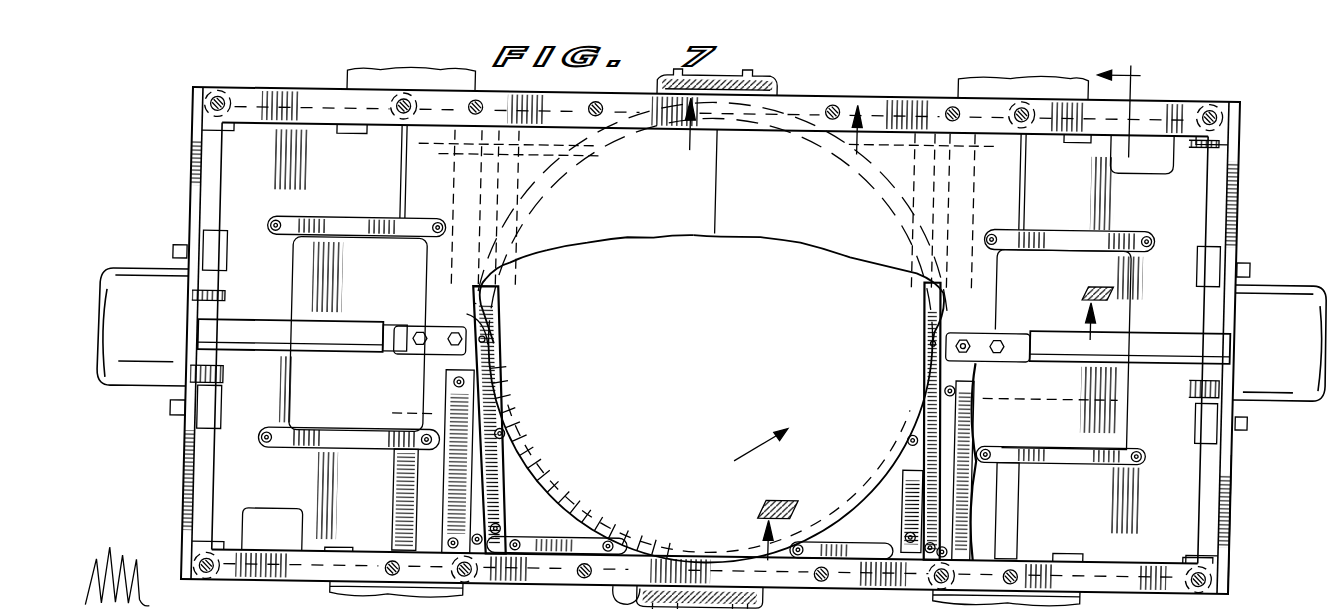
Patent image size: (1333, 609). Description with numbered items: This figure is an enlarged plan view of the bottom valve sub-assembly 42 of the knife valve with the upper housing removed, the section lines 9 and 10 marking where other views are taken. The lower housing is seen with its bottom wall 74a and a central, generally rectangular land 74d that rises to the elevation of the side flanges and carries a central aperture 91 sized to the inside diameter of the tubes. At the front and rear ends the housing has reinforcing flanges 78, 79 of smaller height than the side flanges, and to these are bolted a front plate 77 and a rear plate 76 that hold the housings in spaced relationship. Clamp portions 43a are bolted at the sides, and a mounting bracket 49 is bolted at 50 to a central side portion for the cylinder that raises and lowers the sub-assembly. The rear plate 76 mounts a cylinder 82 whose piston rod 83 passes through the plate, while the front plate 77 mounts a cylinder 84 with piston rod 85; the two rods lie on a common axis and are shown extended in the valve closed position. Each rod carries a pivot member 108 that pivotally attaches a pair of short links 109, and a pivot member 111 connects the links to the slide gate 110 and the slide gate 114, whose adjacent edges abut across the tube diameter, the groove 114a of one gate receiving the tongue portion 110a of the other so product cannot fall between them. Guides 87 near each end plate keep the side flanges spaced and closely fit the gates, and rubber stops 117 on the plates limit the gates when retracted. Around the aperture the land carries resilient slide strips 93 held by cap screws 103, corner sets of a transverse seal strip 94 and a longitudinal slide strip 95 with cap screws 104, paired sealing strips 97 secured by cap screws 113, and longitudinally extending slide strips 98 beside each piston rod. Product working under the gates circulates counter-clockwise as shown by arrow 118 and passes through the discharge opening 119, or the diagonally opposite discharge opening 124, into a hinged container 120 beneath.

The section line 9- 9 is at (1145, 111).
The section line 10- 10 is at (876, 331).
The bottom valve sub-assembly 42 is at (689, 347).
The clamp portion 43a is at (670, 323).
The mounting bracket 49 is at (734, 330).
The bolt 50 is at (625, 583).
The bottom wall 74a is at (359, 465).
The land 74d is at (580, 462).
The rear plate 76 is at (1255, 524).
The front plate 77 is at (175, 333).
The reinforcing flange 78 is at (1256, 348).
The reinforcing flange 79 is at (711, 342).
The cylinder 82 is at (1280, 321).
The piston rod 83 is at (1130, 367).
The cylinder 84 is at (143, 302).
The piston rod 85 is at (291, 316).
The guide 87 is at (724, 319).
The central aperture 91 is at (707, 451).
The slide strip 93 is at (712, 418).
The seal strip 94 is at (711, 327).
The slide strip 95 is at (695, 302).
The sealing strip 97 is at (911, 470).
The slide strip 98 is at (706, 348).
The cap screw 103 is at (711, 426).
The cap screw 104 is at (500, 461).
The pivot member 108 is at (996, 319).
The short link 109 is at (419, 317).
The slide gate 110 is at (818, 287).
The tongue portion 110a is at (1051, 347).
The pivot member 111 is at (513, 313).
The cap screw 113 is at (1089, 508).
The slide gate 114 is at (586, 289).
The groove 114a is at (359, 277).
The rubber stop 117 is at (711, 285).
The arrow 118 is at (752, 432).
The discharge opening 119 is at (755, 172).
The container 120 is at (751, 522).
The discharge opening 124 is at (276, 505).